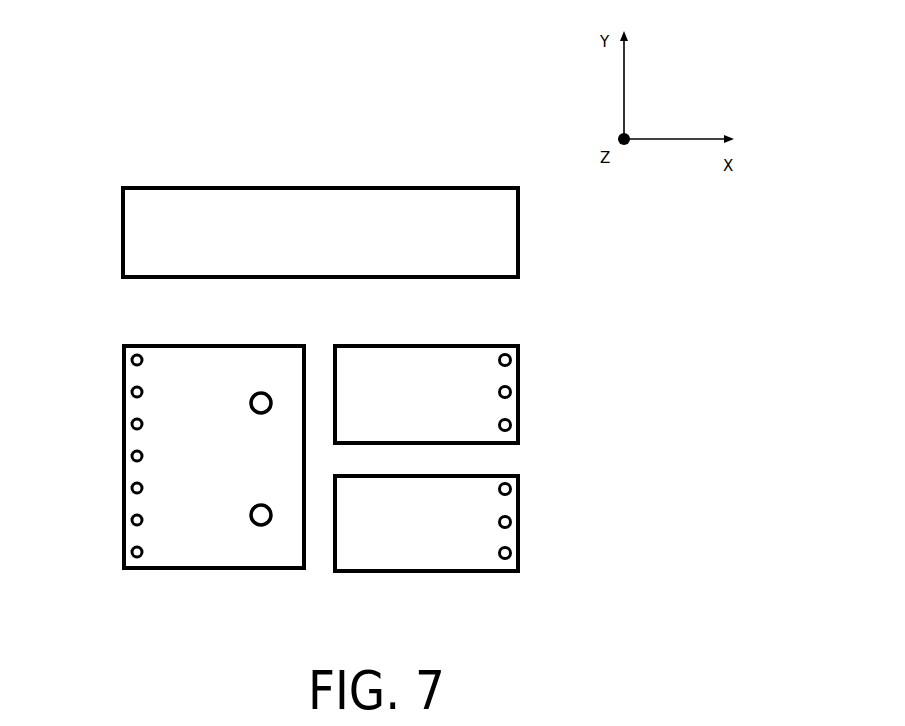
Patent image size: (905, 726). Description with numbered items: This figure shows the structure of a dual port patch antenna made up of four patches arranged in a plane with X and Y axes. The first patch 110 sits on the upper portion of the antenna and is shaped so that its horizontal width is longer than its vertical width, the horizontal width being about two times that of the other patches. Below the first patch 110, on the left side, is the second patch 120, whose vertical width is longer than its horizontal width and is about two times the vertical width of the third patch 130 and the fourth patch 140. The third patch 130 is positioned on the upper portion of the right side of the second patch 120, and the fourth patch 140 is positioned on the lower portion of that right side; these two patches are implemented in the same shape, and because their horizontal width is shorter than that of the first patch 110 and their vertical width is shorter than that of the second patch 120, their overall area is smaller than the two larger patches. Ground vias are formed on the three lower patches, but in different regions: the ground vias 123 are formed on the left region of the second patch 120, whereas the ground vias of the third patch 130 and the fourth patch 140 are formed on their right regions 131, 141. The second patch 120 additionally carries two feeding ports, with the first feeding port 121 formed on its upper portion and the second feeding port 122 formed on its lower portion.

The patch-1 110 is at (122, 232).
The patch-2 120 is at (122, 362).
The feeding port-1 121 is at (262, 392).
The feeding port-2 122 is at (262, 527).
The ground vias 123 is at (122, 424).
The patch-3 130 is at (522, 360).
The right region 131 is at (514, 393).
The patch-4 140 is at (522, 490).
The right region 141 is at (514, 523).